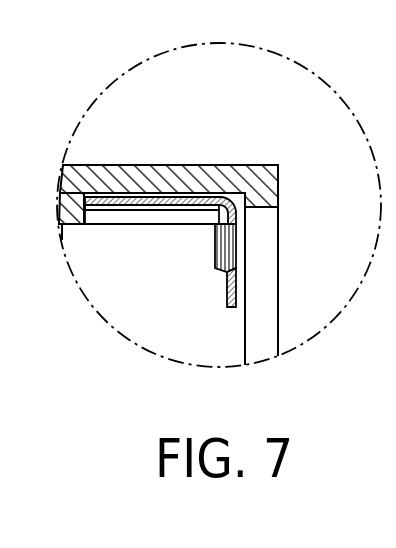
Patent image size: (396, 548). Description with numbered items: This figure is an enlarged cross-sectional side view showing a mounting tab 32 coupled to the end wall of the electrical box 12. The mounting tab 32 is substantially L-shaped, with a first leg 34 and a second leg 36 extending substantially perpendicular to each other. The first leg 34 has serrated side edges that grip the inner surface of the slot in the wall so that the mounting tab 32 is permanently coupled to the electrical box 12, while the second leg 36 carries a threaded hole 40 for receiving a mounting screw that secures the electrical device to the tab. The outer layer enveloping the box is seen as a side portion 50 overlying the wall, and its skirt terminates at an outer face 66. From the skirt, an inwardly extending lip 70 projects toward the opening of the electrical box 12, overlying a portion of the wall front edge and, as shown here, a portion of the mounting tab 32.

The electrical box 12 is at (72, 224).
The mounting tab 32 is at (252, 288).
The first leg 34 is at (227, 285).
The second leg 36 is at (118, 210).
The threaded hole 40 is at (215, 258).
The side portion 50 is at (177, 165).
The outer face 66 is at (279, 171).
The lip 70 is at (266, 214).